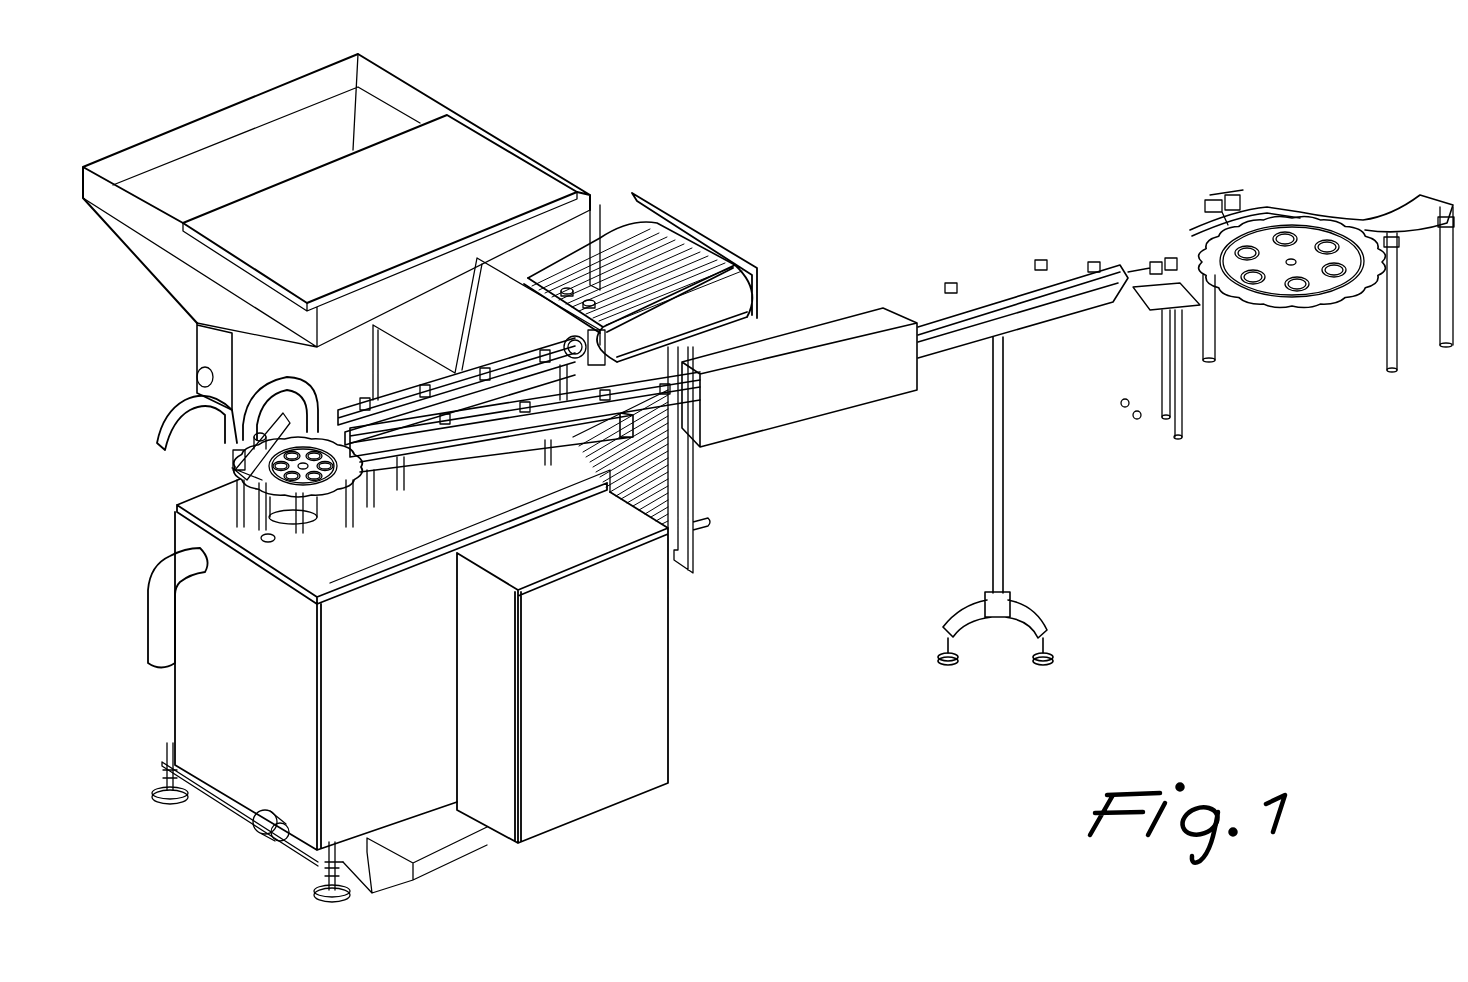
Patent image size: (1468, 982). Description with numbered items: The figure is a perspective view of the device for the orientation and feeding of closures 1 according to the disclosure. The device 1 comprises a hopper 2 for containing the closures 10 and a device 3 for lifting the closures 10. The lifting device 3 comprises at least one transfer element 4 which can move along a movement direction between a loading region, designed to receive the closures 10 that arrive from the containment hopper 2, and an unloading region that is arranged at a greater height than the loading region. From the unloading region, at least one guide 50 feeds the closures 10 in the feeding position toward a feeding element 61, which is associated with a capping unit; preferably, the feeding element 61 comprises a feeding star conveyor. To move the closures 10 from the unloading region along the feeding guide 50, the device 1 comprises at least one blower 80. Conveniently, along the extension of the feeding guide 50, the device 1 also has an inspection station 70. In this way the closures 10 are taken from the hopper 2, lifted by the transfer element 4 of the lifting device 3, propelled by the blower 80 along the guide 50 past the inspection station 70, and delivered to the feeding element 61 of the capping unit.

The device for the orientation and feeding of closures 1 is at (768, 461).
The hopper 2 is at (519, 136).
The device for lifting the closures 3 is at (728, 238).
The transfer element 4 is at (680, 253).
The closures 10 is at (568, 290).
The guide 50 is at (420, 380).
The feeding element 61 is at (1308, 203).
The inspection station 70 is at (250, 512).
The blower 80 is at (270, 742).